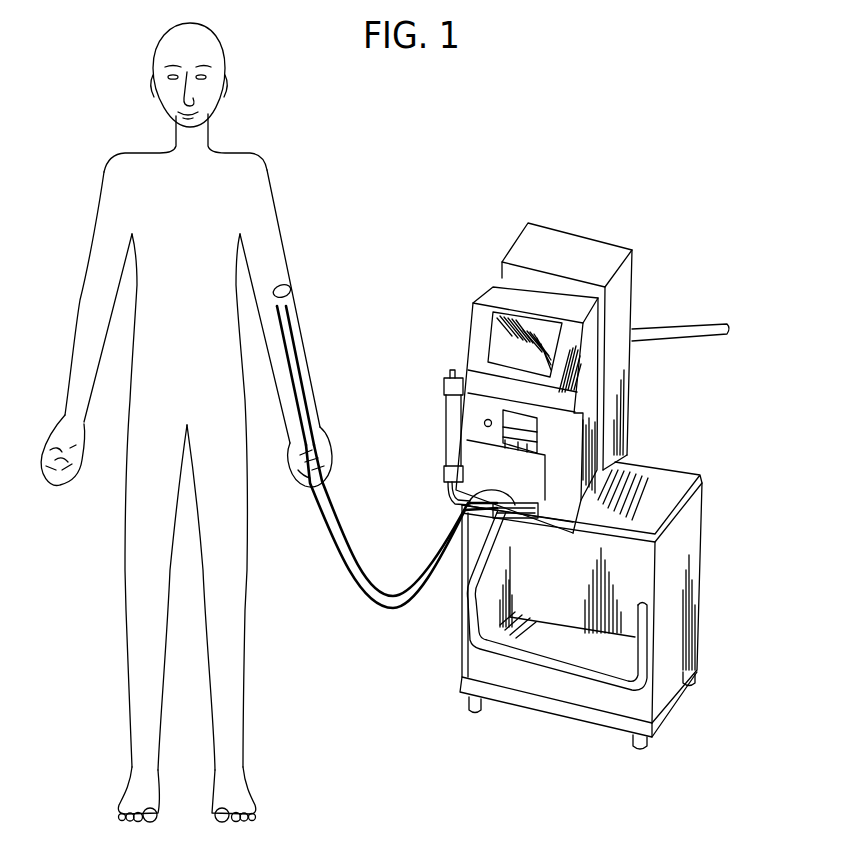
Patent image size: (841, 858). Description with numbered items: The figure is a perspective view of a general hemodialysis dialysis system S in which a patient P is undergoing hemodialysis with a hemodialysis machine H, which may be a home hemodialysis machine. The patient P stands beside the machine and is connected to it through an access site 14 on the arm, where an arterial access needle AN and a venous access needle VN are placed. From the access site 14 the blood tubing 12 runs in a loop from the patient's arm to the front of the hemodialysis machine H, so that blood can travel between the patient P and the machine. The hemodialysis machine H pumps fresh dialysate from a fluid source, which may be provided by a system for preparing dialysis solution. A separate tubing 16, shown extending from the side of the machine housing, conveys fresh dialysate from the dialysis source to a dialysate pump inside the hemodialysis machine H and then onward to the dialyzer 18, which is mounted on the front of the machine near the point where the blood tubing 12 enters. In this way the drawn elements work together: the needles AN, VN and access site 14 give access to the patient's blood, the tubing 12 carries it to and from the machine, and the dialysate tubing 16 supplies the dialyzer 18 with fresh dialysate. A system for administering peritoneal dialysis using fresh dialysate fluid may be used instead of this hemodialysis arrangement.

The patient P is at (230, 152).
The access site 14 is at (288, 283).
The arterial access needle AN is at (293, 310).
The venous access needle VN is at (290, 371).
The tubing 12 is at (404, 612).
The dialyzer 18 is at (445, 437).
The dialysis system S is at (540, 240).
The hemodialysis machine H is at (483, 283).
The tubing 16 is at (708, 323).